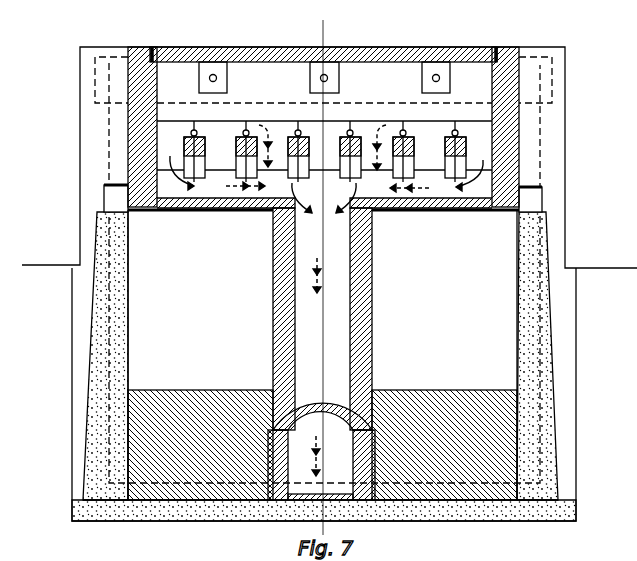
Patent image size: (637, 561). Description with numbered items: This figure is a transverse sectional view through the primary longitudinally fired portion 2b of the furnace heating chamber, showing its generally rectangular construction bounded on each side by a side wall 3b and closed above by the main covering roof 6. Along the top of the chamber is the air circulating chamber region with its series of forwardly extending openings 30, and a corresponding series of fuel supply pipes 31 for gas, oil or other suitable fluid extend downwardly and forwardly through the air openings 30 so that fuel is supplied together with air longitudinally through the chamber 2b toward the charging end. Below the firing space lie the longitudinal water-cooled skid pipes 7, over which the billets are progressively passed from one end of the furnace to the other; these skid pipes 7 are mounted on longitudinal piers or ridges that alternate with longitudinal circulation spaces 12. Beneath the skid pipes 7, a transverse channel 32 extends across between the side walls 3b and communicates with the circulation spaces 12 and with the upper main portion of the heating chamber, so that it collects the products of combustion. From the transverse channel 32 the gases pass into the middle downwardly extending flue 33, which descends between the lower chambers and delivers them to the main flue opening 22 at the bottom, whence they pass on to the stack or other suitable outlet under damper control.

The main covering roof 6 is at (394, 48).
The forwardly extending openings 30 is at (202, 72).
The fuel supply pipes 31 is at (216, 76).
The primary longitudinally fired portion 2b is at (324, 123).
The side wall 3b is at (598, 115).
The longitudinal water-cooled skid pipes 7 is at (196, 132).
The longitudinal circulation spaces 12 is at (325, 157).
The transverse channel 32 is at (324, 194).
The middle downwardly extending flue 33 is at (322, 319).
The main flue opening 22 is at (321, 451).